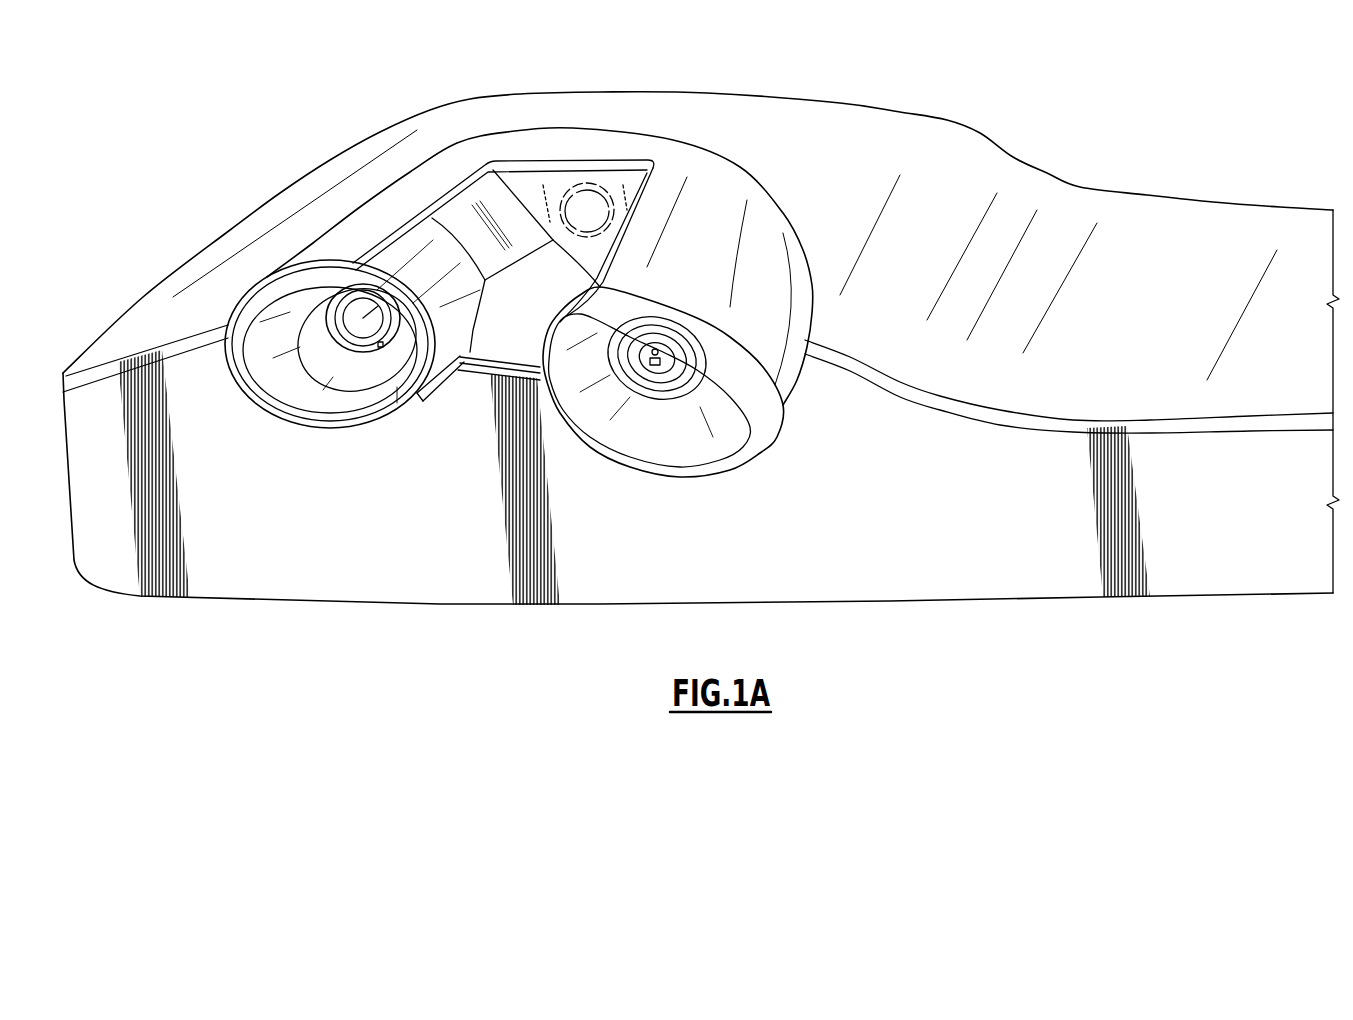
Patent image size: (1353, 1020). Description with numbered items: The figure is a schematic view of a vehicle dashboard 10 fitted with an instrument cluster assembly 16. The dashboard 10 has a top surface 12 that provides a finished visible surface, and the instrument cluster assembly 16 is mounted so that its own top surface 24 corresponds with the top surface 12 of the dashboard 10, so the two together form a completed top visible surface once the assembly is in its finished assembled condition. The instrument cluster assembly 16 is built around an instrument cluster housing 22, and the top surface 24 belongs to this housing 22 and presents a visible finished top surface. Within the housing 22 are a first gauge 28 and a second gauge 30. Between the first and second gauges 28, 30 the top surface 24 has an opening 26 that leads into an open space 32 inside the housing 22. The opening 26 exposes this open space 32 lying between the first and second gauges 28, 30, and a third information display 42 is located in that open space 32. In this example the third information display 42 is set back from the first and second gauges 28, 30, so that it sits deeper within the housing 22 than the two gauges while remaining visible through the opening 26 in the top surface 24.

The vehicle dashboard 10 is at (1188, 159).
The top surface 12 is at (927, 184).
The instrument cluster assembly 16 is at (640, 490).
The instrument cluster housing 22 is at (362, 442).
The top surface 24 is at (728, 200).
The opening 26 is at (480, 158).
The first gauge 28 is at (337, 353).
The second gauge 30 is at (646, 383).
The open space 32 is at (526, 354).
The third information display 42 is at (553, 247).